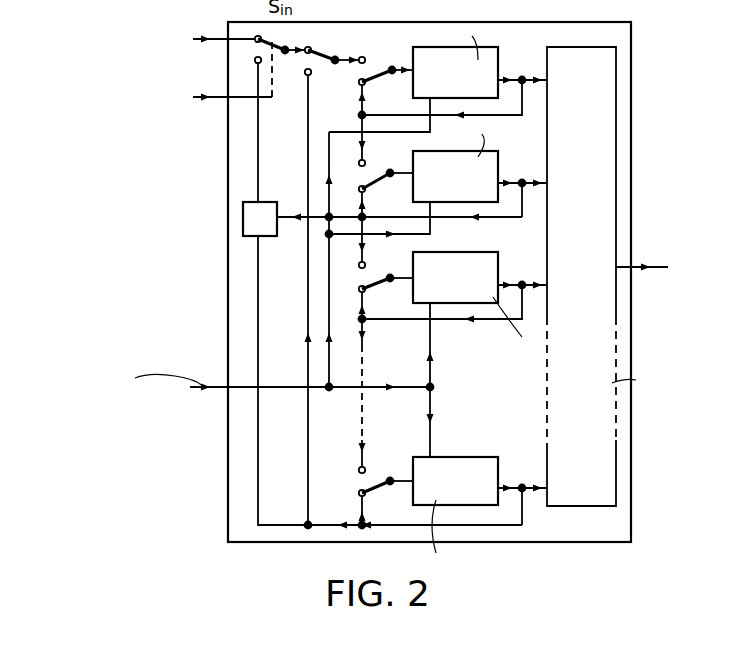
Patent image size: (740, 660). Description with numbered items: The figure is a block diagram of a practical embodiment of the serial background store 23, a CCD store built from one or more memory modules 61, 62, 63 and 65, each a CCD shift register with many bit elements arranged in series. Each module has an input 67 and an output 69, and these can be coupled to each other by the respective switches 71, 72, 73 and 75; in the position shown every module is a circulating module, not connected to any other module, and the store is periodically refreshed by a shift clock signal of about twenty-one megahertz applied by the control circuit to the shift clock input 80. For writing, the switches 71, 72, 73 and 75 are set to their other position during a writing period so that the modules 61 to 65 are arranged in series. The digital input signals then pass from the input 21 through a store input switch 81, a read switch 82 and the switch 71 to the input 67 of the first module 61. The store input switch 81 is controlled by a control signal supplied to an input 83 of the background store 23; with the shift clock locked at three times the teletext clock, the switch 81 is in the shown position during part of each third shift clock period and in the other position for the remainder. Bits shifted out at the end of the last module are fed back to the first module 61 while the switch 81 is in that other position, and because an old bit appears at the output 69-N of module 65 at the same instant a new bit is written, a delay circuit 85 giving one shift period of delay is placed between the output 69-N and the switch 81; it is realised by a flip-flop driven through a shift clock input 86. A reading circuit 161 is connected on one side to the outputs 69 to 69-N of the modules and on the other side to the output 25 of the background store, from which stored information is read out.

The input 21 is at (224, 42).
The serial background store 23 is at (226, 290).
The output 25 is at (636, 266).
The first memory module 61 is at (498, 50).
The memory module 62 is at (494, 151).
The memory module 63 is at (490, 252).
The last memory module 65 is at (465, 455).
The module input 67 is at (414, 80).
The module output 69 is at (500, 80).
The output of module 65 69-N is at (500, 486).
The switch 71 is at (392, 82).
The switch 72 is at (390, 181).
The switch 73 is at (390, 286).
The switch 75 is at (390, 490).
The shift clock input 80 is at (222, 393).
The store input switch 81 is at (270, 42).
The read switch 82 is at (322, 52).
The input 83 is at (225, 103).
The delay circuit 85 is at (260, 236).
The shift clock input 86 is at (284, 212).
The reading circuit 161 is at (594, 508).